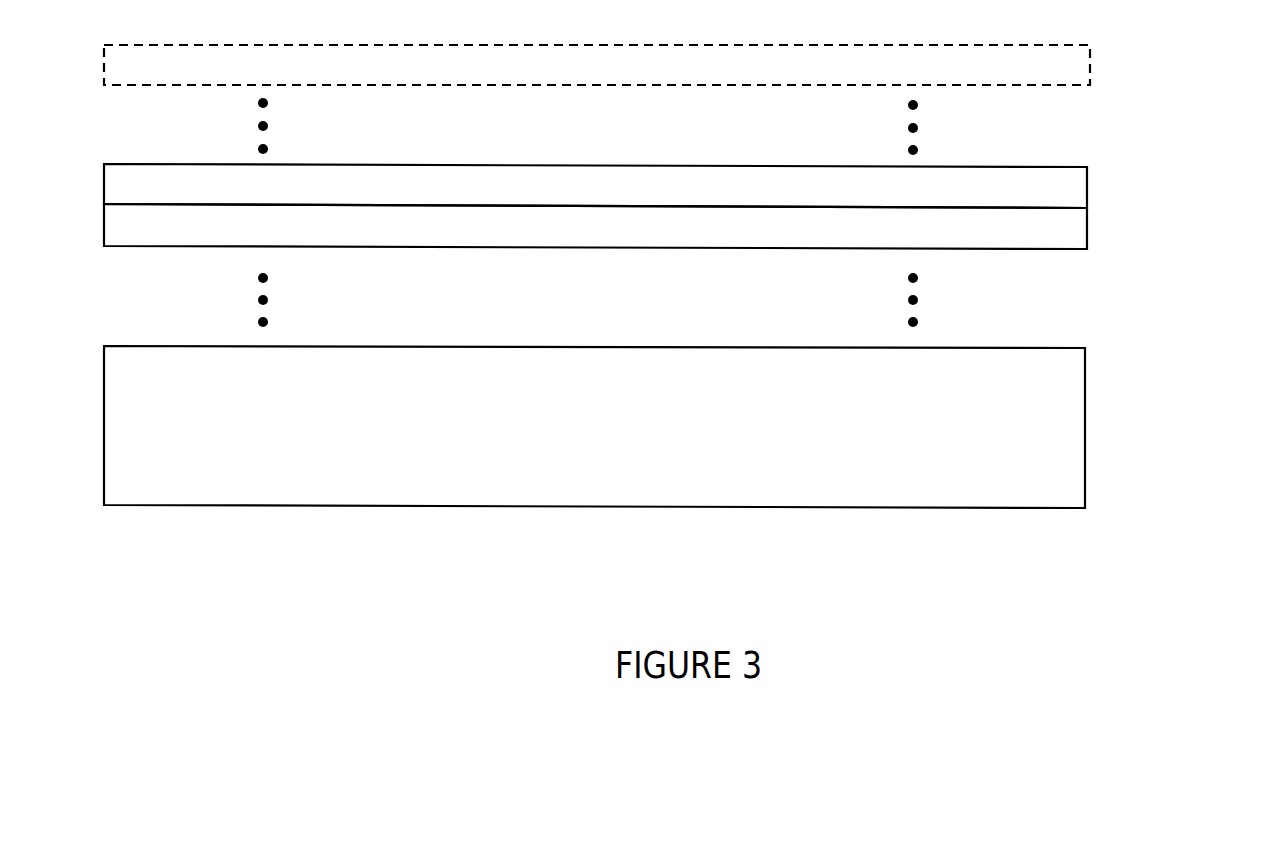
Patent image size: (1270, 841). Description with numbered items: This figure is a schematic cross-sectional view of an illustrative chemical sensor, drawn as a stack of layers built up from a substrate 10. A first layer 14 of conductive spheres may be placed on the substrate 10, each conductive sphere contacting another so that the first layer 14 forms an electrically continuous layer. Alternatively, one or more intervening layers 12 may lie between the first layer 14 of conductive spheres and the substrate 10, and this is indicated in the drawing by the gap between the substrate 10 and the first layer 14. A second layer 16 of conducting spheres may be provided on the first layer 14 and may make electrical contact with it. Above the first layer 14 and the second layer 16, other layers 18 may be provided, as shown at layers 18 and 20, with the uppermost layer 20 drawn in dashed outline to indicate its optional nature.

The substrate 10 is at (1062, 410).
The intervening layers 12 is at (1064, 304).
The first layer of conductive spheres 14 is at (1065, 231).
The second layer of conducting spheres 16 is at (1065, 180).
The other layers 18 is at (1064, 126).
The layer 20 is at (1068, 70).